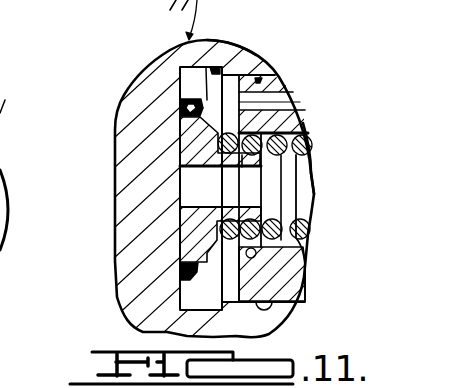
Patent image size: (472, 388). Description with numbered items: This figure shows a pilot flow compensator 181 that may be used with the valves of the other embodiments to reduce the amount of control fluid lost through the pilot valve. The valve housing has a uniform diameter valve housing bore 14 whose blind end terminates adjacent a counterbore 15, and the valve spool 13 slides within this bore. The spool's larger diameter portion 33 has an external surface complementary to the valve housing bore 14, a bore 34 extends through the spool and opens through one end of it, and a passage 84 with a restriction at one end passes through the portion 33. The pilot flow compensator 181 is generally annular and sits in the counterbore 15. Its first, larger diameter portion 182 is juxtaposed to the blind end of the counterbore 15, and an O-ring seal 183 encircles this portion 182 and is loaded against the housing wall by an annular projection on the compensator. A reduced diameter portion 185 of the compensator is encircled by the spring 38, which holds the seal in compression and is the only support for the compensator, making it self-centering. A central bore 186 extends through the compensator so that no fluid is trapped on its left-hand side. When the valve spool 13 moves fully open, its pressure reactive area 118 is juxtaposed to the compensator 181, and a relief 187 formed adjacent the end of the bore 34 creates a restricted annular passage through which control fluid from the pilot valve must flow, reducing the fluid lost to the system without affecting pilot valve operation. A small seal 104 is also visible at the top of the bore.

The valve spool 13 is at (353, 151).
The valve housing bore 14 is at (278, 59).
The counterbore 15 is at (250, 36).
The larger diameter portion 33 is at (303, 319).
The bore 34 is at (294, 228).
The spring 38 is at (301, 186).
The passage 84 is at (295, 77).
The pin 104 is at (240, 50).
The pressure reactive area 118 is at (297, 108).
The pilot flow compensator 181 is at (184, 194).
The first, larger diameter portion 182 is at (123, 118).
The O-ring seal 183 is at (129, 86).
The reduced diameter portion 185 is at (179, 142).
The central bore 186 is at (150, 190).
The relief 187 is at (282, 275).